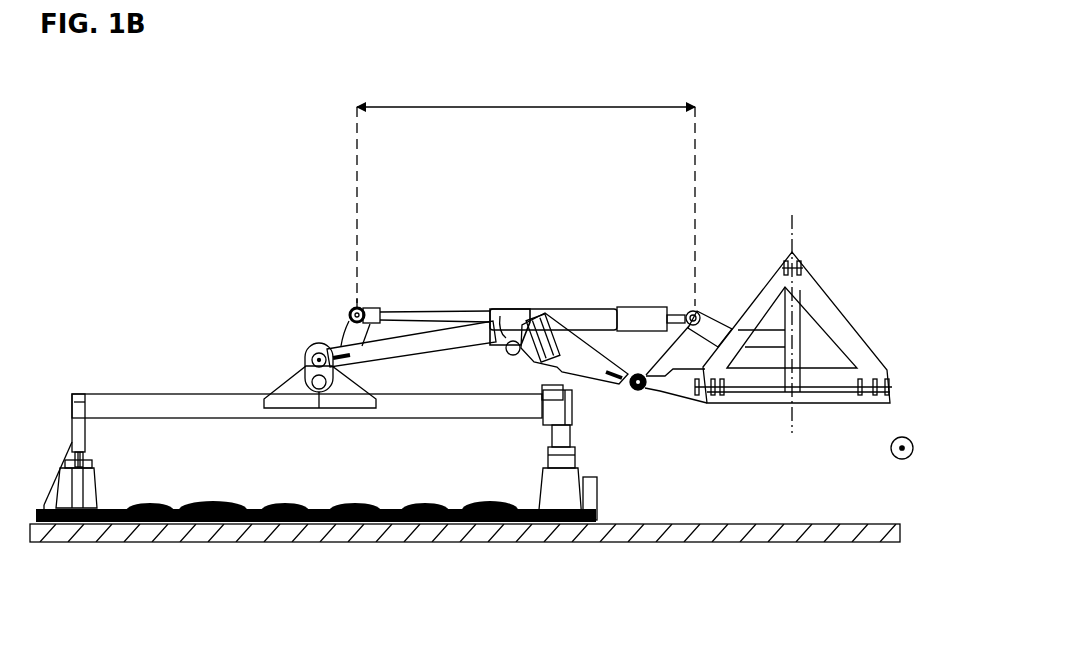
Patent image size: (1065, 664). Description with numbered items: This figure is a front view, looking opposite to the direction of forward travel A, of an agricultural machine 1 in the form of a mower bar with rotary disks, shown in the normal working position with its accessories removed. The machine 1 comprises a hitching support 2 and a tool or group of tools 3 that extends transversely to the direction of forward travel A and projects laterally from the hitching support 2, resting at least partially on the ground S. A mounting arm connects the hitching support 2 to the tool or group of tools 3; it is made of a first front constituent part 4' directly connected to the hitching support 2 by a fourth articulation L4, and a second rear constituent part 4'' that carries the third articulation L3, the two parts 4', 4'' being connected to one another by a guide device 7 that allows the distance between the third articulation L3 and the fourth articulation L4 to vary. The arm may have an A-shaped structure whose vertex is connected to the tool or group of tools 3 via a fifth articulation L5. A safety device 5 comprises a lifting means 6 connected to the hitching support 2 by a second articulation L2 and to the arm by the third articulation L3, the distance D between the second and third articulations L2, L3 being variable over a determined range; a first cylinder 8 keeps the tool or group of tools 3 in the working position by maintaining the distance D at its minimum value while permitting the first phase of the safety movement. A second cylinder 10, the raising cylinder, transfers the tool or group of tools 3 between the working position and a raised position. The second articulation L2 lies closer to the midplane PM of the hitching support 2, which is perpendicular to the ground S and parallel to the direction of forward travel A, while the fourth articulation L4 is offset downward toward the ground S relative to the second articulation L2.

The agricultural machine 1 is at (300, 130).
The hitching support 2 is at (848, 305).
The tool or group of tools 3 is at (288, 366).
The first front constituent part 4' is at (581, 398).
The second rear constituent part 4'' is at (411, 265).
The safety device 5 is at (622, 150).
The lifting means 6 is at (553, 206).
The guide device 7 is at (519, 306).
The first cylinder 8 is at (651, 306).
The second cylinder 10 is at (549, 312).
The second articulation L2 is at (708, 306).
The third articulation L3 is at (346, 311).
The fourth articulation L4 is at (647, 393).
The fifth articulation L5 is at (313, 352).
The midplane PM is at (824, 298).
The ground S is at (752, 524).
The direction of forward travel A is at (915, 448).
The distance D is at (526, 190).